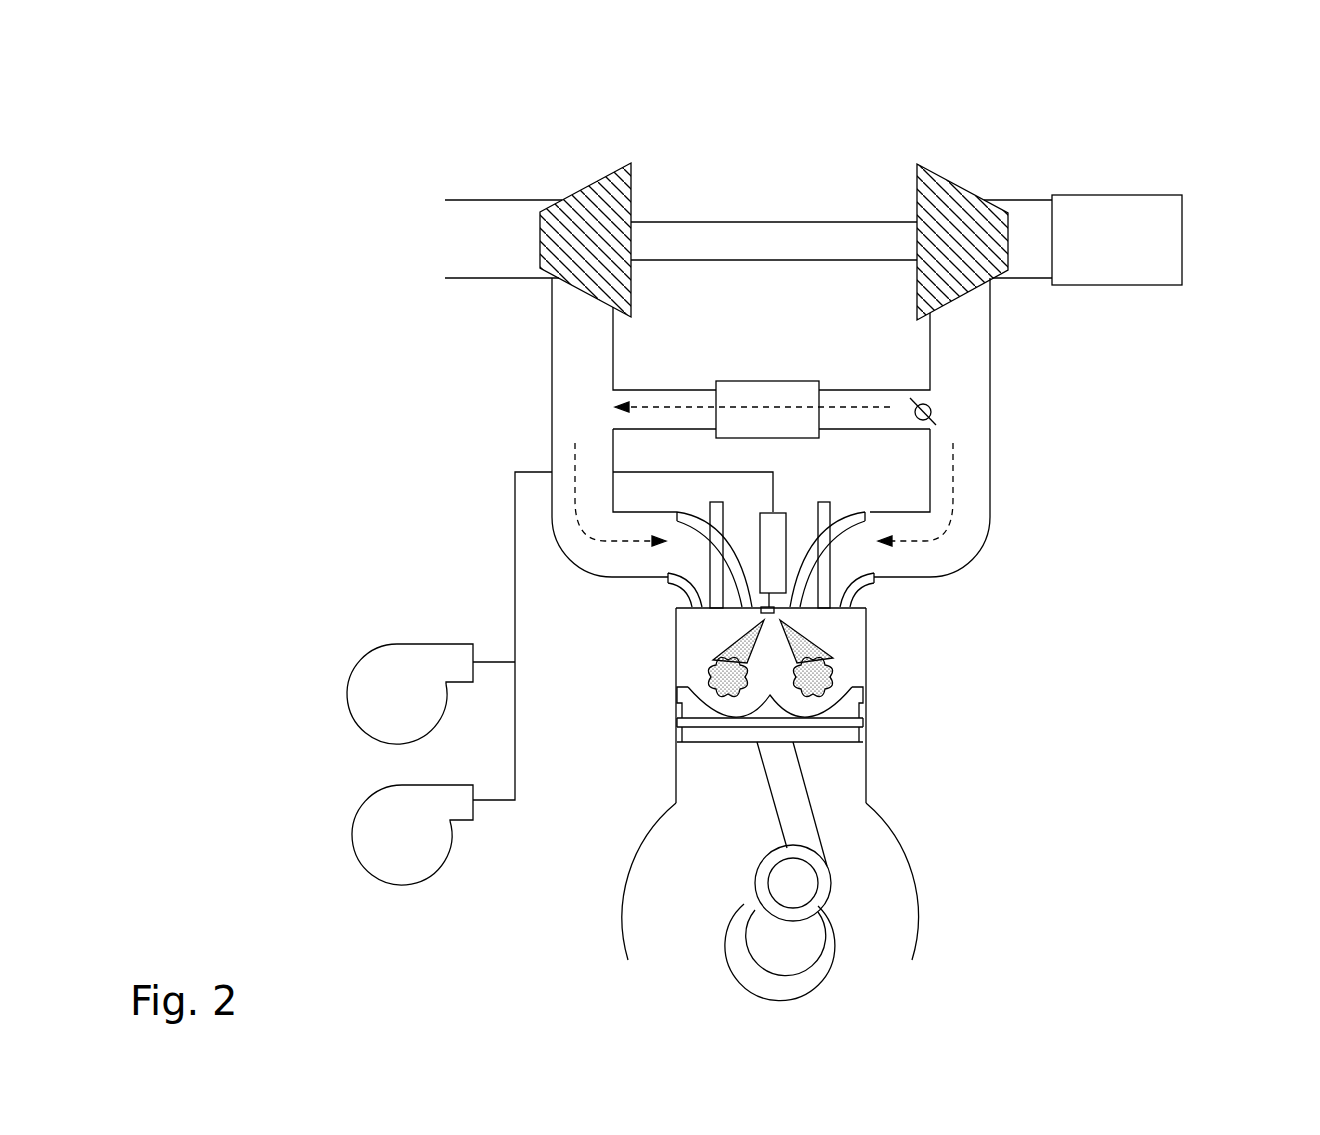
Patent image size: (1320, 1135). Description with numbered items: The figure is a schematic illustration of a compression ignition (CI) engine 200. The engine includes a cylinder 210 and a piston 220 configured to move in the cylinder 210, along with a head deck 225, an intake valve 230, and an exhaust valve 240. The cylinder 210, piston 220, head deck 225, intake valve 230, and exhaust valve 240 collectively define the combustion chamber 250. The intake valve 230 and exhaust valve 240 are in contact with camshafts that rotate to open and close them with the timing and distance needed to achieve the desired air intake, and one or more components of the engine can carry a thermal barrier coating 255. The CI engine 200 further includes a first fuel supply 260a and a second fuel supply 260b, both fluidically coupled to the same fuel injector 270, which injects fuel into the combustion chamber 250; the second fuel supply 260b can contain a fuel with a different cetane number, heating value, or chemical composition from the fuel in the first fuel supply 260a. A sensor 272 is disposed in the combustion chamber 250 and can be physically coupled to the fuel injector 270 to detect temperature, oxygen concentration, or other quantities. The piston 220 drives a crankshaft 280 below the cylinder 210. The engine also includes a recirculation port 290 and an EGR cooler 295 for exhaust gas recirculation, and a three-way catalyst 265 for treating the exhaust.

The compression ignition engine 200 is at (258, 138).
The cylinder 210 is at (675, 652).
The piston 220 is at (818, 738).
The head deck 225 is at (775, 613).
The intake valve 230 is at (708, 500).
The exhaust valve 240 is at (830, 500).
The combustion chamber 250 is at (688, 622).
The thermal barrier coating 255 is at (880, 582).
The first fuel supply 260a is at (400, 668).
The second fuel supply 260b is at (402, 828).
The three-way catalyst 265 is at (1168, 229).
The fuel injector 270 is at (792, 512).
The sensor 272 is at (833, 632).
The crankshaft 280 is at (782, 947).
The recirculation port 290 is at (935, 400).
The EGR cooler 295 is at (768, 380).